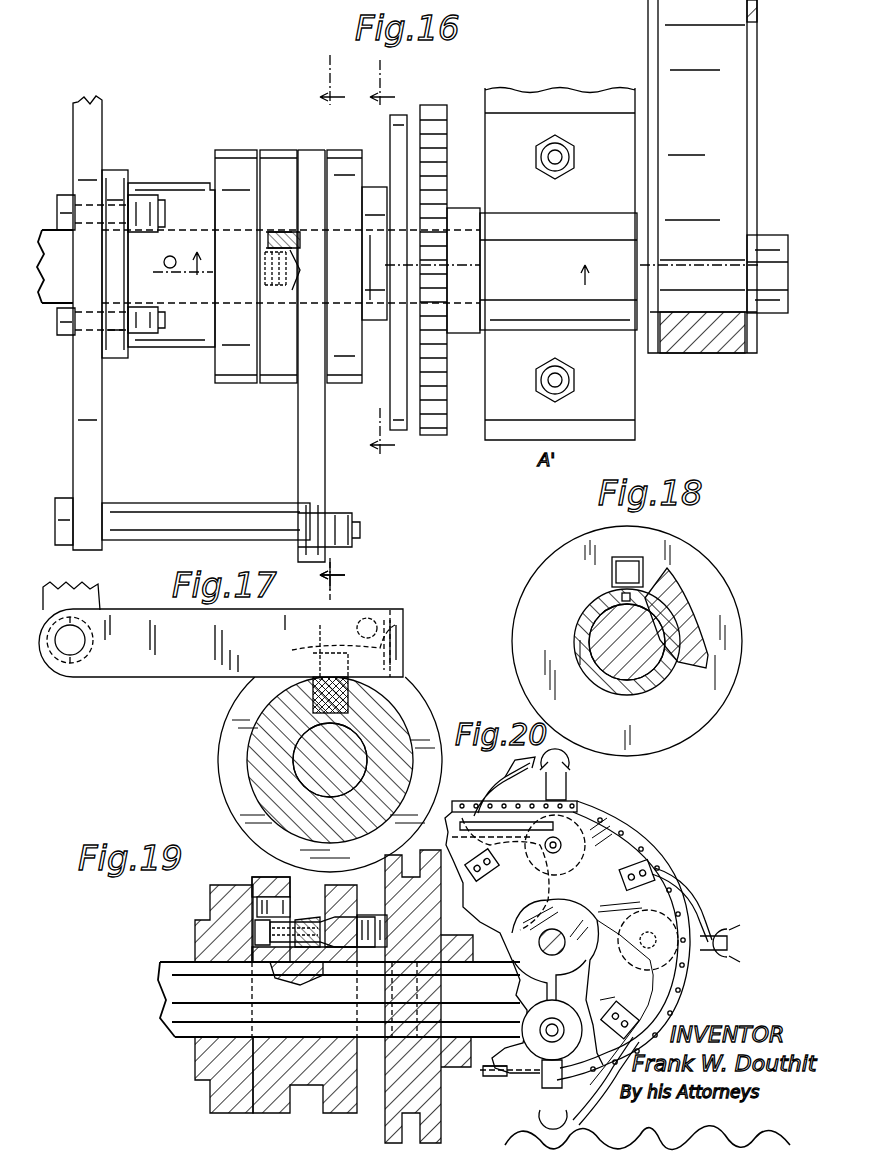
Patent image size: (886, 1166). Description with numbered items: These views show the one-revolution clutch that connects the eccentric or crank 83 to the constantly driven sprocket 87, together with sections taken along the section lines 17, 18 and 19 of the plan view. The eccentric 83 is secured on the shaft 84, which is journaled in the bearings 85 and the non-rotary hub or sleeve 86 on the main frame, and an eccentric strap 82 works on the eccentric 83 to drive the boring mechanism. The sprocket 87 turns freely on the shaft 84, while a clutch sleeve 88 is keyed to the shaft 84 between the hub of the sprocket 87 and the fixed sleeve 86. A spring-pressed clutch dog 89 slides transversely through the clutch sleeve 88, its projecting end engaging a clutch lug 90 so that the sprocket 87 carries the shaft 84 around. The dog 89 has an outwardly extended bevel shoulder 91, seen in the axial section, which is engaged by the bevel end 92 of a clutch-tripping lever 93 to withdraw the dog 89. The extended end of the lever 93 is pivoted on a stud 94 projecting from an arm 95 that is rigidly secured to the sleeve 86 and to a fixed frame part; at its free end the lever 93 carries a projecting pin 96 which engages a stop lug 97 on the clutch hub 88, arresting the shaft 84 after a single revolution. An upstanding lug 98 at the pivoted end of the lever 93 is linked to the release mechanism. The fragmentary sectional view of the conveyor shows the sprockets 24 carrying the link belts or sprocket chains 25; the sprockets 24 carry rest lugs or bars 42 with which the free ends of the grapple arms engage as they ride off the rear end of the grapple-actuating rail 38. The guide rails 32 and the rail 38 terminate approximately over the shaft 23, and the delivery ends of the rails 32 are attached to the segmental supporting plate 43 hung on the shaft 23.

In FIG. 16, the section line 17— 17 is at (342, 327).
In FIG. 17, the section line 17— 17 is at (342, 579).
In FIG. 16, the section line 18— 18 is at (393, 267).
In FIG. 16, the section line 19— 19 is at (382, 258).
In FIG. 20, the shaft 23 is at (560, 935).
In FIG. 20, the sprockets 24 is at (657, 1007).
In FIG. 20, the link belts or sprocket chains 25 is at (640, 848).
In FIG. 20, the guide rails 32 is at (442, 866).
In FIG. 20, the grapple-actuating rail 38 is at (508, 830).
In FIG. 20, the rest lugs or bars 42 is at (490, 875).
In FIG. 20, the segmental supporting plate 43 is at (600, 835).
In FIG. 16, the eccentric strap 82 is at (735, 353).
In FIG. 16, the eccentric or crank 83 is at (735, 218).
In FIG. 16, the shaft 84 is at (55, 312).
In FIG. 17, the shaft 84 is at (309, 765).
In FIG. 18, the shaft 84 is at (605, 634).
In FIG. 19, the shaft 84 is at (185, 1000).
In FIG. 16, the bearing 85 is at (540, 325).
In FIG. 16, the non-rotary hub or sleeve 86 is at (190, 350).
In FIG. 19, the non-rotary hub or sleeve 86 is at (212, 906).
In FIG. 16, the sprocket 87 is at (436, 436).
In FIG. 18, the sprocket 87 is at (590, 662).
In FIG. 19, the sprocket 87 is at (443, 1130).
In FIG. 16, the clutch sleeve 88 is at (280, 383).
In FIG. 17, the clutch sleeve 88 is at (230, 744).
In FIG. 18, the clutch sleeve 88 is at (540, 590).
In FIG. 19, the clutch sleeve 88 is at (335, 1113).
In FIG. 16, the clutch dog 89 is at (290, 282).
In FIG. 17, the clutch dog 89 is at (312, 690).
In FIG. 18, the clutch dog 89 is at (622, 572).
In FIG. 19, the clutch dog 89 is at (382, 985).
In FIG. 16, the clutch lug 90 is at (372, 232).
In FIG. 18, the clutch lug 90 is at (682, 606).
In FIG. 19, the clutch lug 90 is at (409, 996).
In FIG. 16, the bevel shoulder 91 is at (285, 262).
In FIG. 17, the bevel shoulder 91 is at (290, 658).
In FIG. 16, the bevel end 92 is at (313, 240).
In FIG. 19, the bevel end 92 is at (315, 932).
In FIG. 16, the clutch-tripping lever 93 is at (305, 440).
In FIG. 17, the clutch-tripping lever 93 is at (165, 667).
In FIG. 16, the stud 94 is at (182, 515).
In FIG. 17, the stud 94 is at (68, 650).
In FIG. 16, the arm 95 is at (90, 470).
In FIG. 16, the pin 96 is at (284, 228).
In FIG. 17, the pin 96 is at (355, 632).
In FIG. 16, the stop lug 97 is at (262, 216).
In FIG. 17, the stop lug 97 is at (395, 615).
In FIG. 19, the stop lug 97 is at (262, 877).
In FIG. 16, the upstanding lug 98 is at (320, 497).
In FIG. 17, the upstanding lug 98 is at (90, 584).